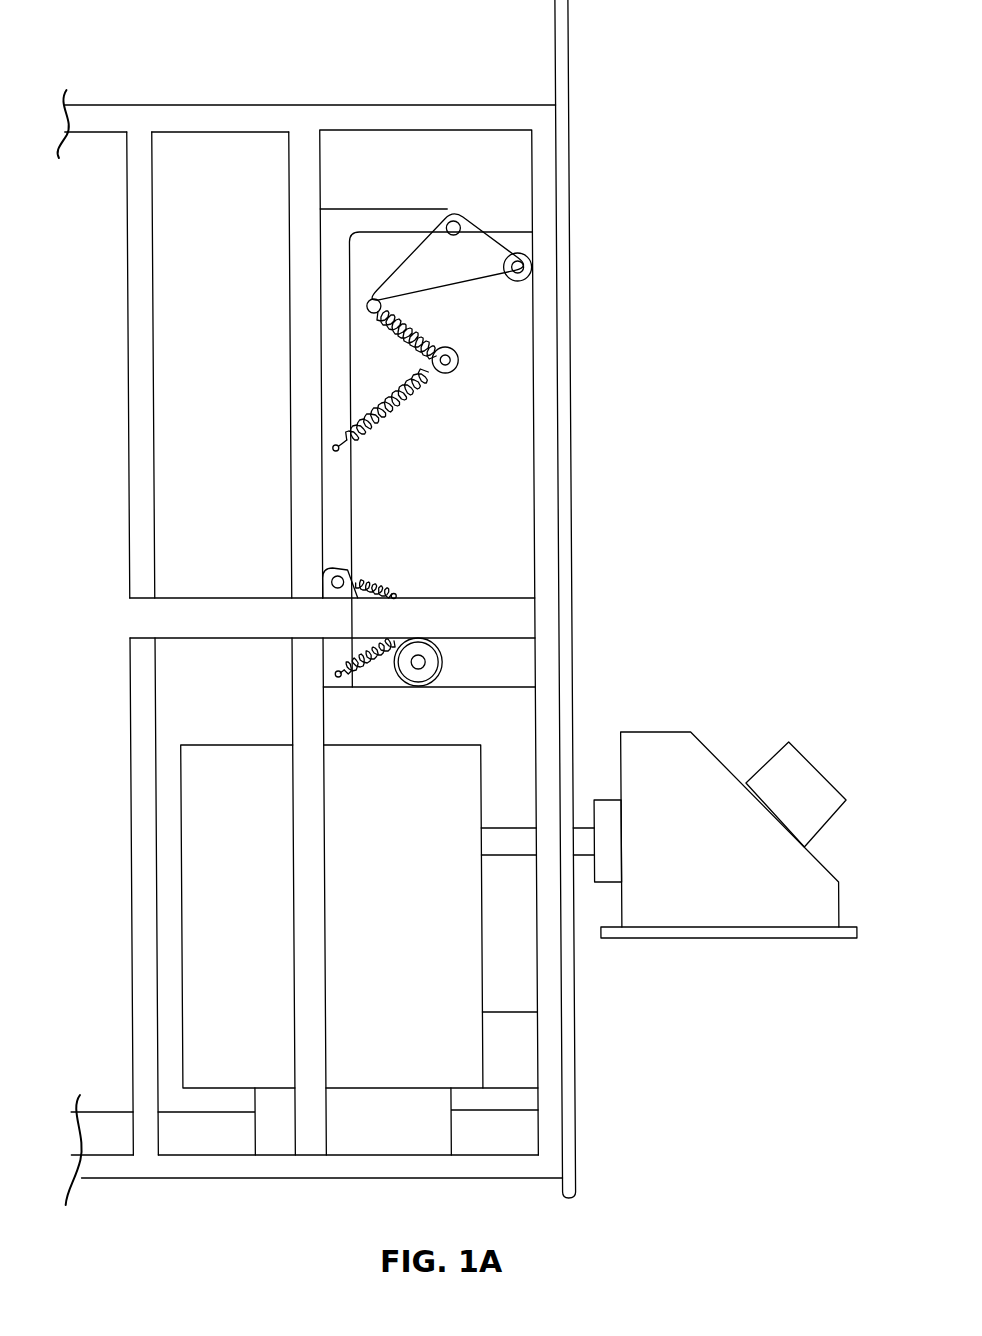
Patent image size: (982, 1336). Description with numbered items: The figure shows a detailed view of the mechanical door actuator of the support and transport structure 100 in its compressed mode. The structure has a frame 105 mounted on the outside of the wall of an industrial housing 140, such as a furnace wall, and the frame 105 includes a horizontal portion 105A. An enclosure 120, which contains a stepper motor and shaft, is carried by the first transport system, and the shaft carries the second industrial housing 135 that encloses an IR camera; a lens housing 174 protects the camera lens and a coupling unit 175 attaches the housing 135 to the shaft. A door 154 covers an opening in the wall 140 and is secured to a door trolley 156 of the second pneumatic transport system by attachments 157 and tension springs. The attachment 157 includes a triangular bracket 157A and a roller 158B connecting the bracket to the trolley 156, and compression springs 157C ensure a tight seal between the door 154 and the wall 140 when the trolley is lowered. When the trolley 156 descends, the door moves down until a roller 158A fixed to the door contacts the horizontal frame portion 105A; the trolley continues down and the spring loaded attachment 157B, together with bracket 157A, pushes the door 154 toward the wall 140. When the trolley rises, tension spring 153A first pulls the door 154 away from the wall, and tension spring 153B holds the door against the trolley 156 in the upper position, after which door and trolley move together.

The support and transport structure 100 is at (684, 66).
The frame 105 is at (552, 1027).
The horizontal portion of the frame 105A is at (220, 628).
The enclosure 120 is at (248, 745).
The industrial housing 135 is at (758, 907).
The industrial housing wall 140 is at (575, 470).
The tension spring 153A is at (393, 398).
The tension spring 153B is at (367, 667).
The door 154 is at (513, 540).
The door trolley structure 156 is at (386, 209).
The attachment 157 is at (510, 214).
The triangular bracket 157A is at (473, 285).
The attachment 157B is at (373, 590).
The compression spring 157C is at (452, 337).
The roller 158A is at (443, 662).
The roller 158B is at (532, 272).
The lens housing 174 is at (767, 762).
The coupling unit 175 is at (605, 800).